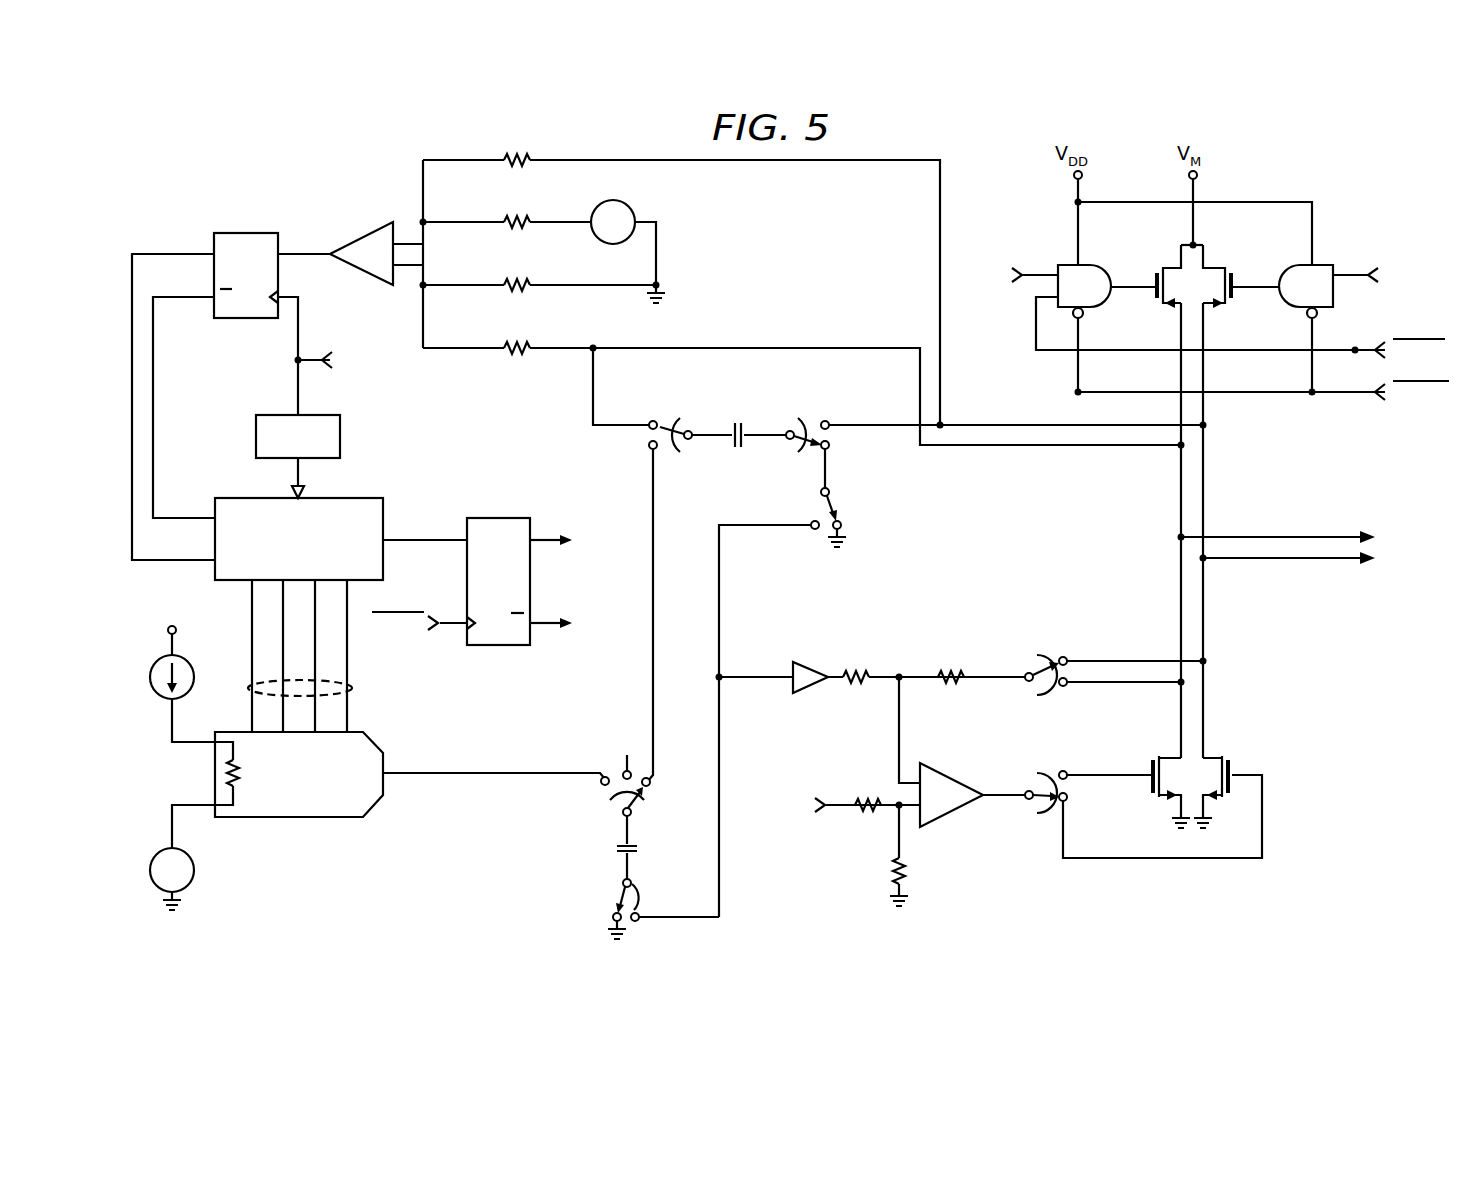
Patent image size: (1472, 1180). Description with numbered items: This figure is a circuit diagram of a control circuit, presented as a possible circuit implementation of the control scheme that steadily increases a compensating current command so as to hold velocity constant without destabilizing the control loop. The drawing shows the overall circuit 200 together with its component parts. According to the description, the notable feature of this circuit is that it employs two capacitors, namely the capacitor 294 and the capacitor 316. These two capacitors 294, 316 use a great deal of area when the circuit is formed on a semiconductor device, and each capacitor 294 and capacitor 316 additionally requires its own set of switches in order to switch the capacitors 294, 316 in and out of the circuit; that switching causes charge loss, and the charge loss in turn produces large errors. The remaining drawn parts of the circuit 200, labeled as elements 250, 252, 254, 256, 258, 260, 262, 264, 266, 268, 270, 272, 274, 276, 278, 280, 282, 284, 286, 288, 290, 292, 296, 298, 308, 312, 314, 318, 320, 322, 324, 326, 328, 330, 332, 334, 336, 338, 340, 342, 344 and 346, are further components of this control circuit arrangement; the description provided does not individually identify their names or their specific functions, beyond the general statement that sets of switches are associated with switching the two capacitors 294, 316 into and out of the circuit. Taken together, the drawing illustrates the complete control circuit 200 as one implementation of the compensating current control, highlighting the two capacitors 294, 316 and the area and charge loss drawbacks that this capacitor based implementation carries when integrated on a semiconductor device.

The motor drive circuit 200 is at (803, 266).
The VDRV+ output 250 is at (1308, 530).
The VDRV- output 252 is at (1306, 566).
The resistor 254 is at (504, 345).
The resistor 256 is at (504, 282).
The comparator 258 is at (367, 237).
The resistor 260 is at (504, 157).
The resistor 262 is at (504, 220).
The voltage source VC 264 is at (592, 231).
The D flip-flop 266 is at (248, 235).
The SAMPLE input 268 is at (306, 360).
The 4 bit up/down counter 270 is at (240, 498).
The delay 272 is at (276, 415).
The counter output bus 274 is at (352, 690).
The 4 bit DAC 276 is at (331, 819).
The current source 278 is at (170, 717).
The voltage source 280 is at (162, 884).
The DAC output 282 is at (474, 778).
The counter output 0·DOWN 284 is at (438, 546).
The D flip-flop 286 is at (500, 518).
The FLOAT signal 288 is at (458, 625).
The PLUS signal / AND gate 290 is at (550, 625).
The MINUS signal / AND gate 292 is at (540, 536).
The capacitor 294 is at (738, 421).
The switch 296 is at (648, 432).
The switch 298 is at (840, 432).
The switch 308 is at (835, 499).
The switch 312 is at (640, 898).
The buffer amplifier 314 is at (808, 668).
The capacitor 316 is at (612, 846).
The switch 318 is at (645, 798).
The resistor 320 is at (857, 686).
The amplifier 322 is at (950, 814).
The resistor 324 is at (952, 686).
The switch 326 is at (1026, 670).
The resistor 328 is at (864, 812).
The resistor 330 is at (892, 876).
The switch 332 is at (1030, 810).
The transistor 334 is at (1151, 762).
The transistor 336 is at (1232, 768).
The transistor 338 is at (1154, 270).
The inverting output 340 is at (1102, 310).
The transistor 342 is at (1234, 270).
The inverting output 344 is at (1280, 310).
The RETEN line 346 is at (1242, 400).